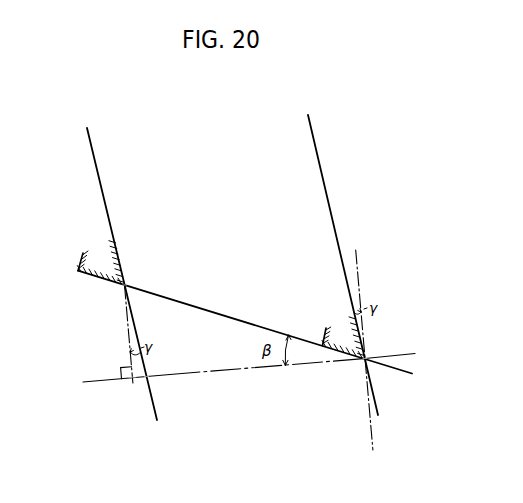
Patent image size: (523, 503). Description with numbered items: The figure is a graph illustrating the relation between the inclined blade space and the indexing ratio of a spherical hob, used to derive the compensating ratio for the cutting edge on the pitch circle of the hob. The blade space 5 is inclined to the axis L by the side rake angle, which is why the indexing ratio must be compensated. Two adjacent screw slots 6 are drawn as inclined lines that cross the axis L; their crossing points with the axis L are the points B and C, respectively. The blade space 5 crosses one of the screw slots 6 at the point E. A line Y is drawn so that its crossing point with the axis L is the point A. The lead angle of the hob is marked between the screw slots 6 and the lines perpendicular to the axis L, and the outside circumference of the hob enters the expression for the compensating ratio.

The blade space 5 is at (228, 316).
The screw slot 6 is at (102, 192).
The axis L is at (103, 381).
The line Y is at (126, 317).
The crossing point A is at (132, 379).
The crossing point E is at (126, 283).
The crossing point B is at (360, 362).
The crossing point C is at (150, 378).